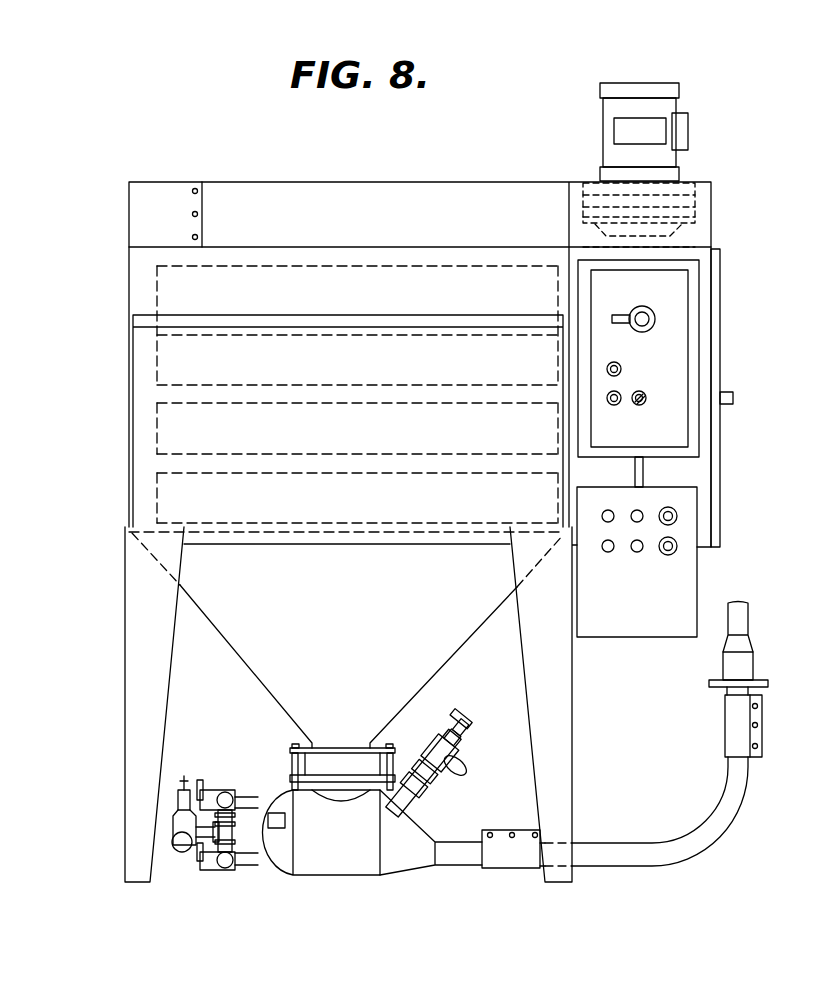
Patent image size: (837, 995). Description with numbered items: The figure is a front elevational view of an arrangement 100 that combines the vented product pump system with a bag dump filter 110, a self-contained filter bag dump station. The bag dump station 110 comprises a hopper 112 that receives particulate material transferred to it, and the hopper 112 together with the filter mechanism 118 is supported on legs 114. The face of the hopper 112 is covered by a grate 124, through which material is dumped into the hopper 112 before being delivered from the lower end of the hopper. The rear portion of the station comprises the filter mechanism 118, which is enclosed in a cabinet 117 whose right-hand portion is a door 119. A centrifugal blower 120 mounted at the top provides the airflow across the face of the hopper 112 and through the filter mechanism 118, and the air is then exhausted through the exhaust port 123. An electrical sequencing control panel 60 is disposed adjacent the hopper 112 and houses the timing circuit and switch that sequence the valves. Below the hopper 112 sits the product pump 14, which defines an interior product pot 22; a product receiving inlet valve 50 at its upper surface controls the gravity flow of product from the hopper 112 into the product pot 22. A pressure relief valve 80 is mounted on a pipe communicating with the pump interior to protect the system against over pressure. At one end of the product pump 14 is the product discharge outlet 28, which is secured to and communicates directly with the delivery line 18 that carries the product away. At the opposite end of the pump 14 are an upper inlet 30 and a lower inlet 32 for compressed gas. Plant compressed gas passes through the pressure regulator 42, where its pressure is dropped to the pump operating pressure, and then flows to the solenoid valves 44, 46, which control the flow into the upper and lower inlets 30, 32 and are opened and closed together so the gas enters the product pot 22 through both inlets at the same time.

The arrangement 100 is at (746, 335).
The bag dump filter 110 is at (129, 373).
The hopper 112 is at (364, 644).
The legs 114 is at (573, 717).
The cabinet 117 is at (128, 266).
The filter mechanism 118 is at (384, 370).
The door 119 is at (714, 462).
The centrifugal blower 120 is at (700, 196).
The exhaust port 123 is at (164, 187).
The grate 124 is at (318, 527).
The electrical sequencing control panel 60 is at (699, 584).
The product receiving inlet valve 50 is at (389, 748).
The pressure relief valve 80 is at (452, 738).
The product pot 22 is at (350, 849).
The product pump 14 is at (350, 886).
The product discharge outlet 28 is at (456, 830).
The delivery line 18 is at (737, 812).
The upper inlet 30 is at (262, 796).
The lower inlet 32 is at (258, 866).
The pressure regulator 42 is at (182, 856).
The solenoid valve 44 is at (222, 790).
The solenoid valve 46 is at (226, 870).